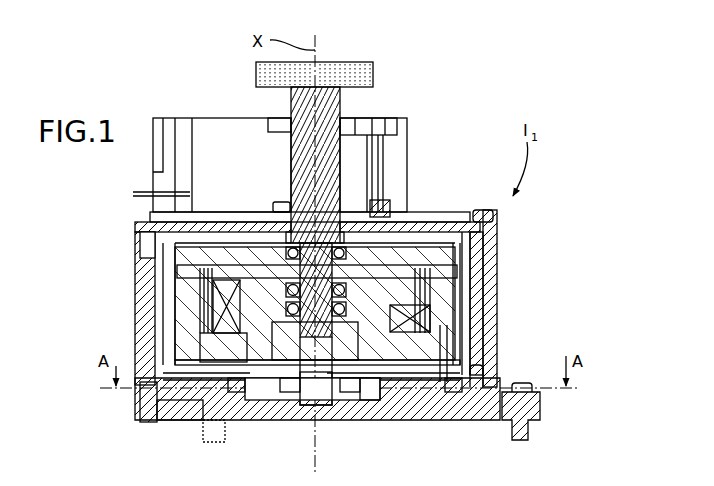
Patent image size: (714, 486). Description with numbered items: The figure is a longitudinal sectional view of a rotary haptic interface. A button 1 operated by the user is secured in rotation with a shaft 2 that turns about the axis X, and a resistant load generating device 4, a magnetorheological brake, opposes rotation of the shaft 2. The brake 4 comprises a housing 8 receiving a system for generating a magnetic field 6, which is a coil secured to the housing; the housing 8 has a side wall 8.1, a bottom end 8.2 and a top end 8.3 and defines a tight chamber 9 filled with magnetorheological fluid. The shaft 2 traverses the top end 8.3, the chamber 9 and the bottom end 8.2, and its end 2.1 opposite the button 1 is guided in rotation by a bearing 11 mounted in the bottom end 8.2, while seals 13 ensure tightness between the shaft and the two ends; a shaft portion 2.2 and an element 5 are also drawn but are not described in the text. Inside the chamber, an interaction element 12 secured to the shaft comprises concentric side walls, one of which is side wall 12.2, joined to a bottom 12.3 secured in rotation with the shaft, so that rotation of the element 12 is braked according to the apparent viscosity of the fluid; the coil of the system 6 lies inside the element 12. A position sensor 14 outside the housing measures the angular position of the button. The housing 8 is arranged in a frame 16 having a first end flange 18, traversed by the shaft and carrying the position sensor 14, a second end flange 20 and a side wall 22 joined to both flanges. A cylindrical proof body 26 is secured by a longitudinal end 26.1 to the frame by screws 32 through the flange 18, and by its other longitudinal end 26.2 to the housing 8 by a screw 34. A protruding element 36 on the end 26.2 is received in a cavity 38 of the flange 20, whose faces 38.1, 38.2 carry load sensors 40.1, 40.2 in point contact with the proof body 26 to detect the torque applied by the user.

The button 1 is at (368, 72).
The shaft 2 is at (332, 180).
The end of the shaft 2.1 is at (222, 262).
The shaft shoulder 2.2 is at (302, 225).
The resistant load generating device 4 is at (440, 226).
The guide element 5 is at (200, 240).
The system for generating a magnetic field 6 is at (472, 314).
The housing 8 is at (183, 290).
The side wall 8.1 is at (462, 290).
The bottom end 8.2 is at (384, 366).
The top end 8.3 is at (416, 250).
The tight chamber 9 is at (470, 262).
The bearing 11 is at (278, 310).
The interaction element 12 is at (440, 278).
The side wall 12.2 is at (268, 240).
The bottom 12.3 is at (245, 265).
The seals 13 is at (345, 285).
The position sensor 14 is at (406, 140).
The frame 16 is at (420, 429).
The first end flange 18 is at (133, 224).
The second end flange 20 is at (193, 404).
The side wall 22 is at (150, 299).
The proof body 26 is at (143, 384).
The longitudinal end 26.1 is at (500, 234).
The longitudinal end 26.2 is at (474, 372).
The screw 32 is at (486, 219).
The screw 34 is at (455, 386).
The protruding element 36 is at (307, 410).
The cavity 38 is at (235, 400).
The face 38.1 is at (227, 412).
The face 38.2 is at (356, 394).
The load sensor 40.1 is at (250, 404).
The load sensor 40.2 is at (350, 398).